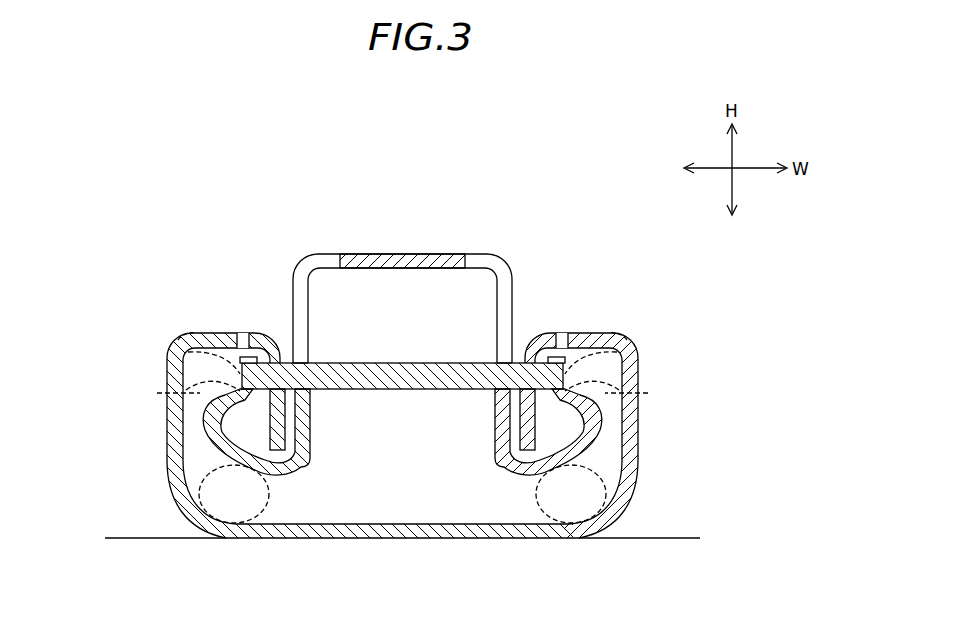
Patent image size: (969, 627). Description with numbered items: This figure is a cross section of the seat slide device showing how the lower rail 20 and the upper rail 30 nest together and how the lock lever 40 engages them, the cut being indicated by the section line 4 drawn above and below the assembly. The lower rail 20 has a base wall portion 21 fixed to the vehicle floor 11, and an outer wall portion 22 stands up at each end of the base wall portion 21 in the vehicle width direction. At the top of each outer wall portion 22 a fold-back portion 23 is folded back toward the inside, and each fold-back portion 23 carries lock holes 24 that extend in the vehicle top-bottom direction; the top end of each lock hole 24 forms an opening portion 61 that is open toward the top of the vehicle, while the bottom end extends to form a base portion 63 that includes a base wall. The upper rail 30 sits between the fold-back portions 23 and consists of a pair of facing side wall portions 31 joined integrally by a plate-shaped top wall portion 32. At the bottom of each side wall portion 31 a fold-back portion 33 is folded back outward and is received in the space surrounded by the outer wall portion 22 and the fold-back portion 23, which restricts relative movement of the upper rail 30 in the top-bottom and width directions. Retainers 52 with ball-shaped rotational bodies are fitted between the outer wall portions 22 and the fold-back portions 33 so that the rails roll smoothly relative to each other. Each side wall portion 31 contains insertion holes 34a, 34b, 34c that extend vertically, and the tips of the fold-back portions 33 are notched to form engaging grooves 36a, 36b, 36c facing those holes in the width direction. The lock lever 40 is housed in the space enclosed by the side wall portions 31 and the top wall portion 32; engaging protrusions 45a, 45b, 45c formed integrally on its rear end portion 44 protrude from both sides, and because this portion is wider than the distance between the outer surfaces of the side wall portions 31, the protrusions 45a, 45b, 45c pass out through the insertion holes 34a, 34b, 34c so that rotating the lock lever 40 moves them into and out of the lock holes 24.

The section line IV-IV 4 is at (402, 237).
The vehicle floor 11 is at (680, 537).
The lower rail 20 is at (403, 440).
The base wall portion 21 is at (455, 532).
The outer wall portion 22 is at (403, 419).
The fold-back portion 23 is at (400, 432).
The lock hole 24 is at (403, 419).
The upper rail 30 is at (401, 288).
The side wall portion 31 is at (401, 299).
The top wall portion 32 is at (372, 253).
The fold-back portion 33 is at (200, 455).
The insertion hole 34a is at (401, 299).
The insertion hole 34b is at (401, 299).
The insertion hole 34c is at (532, 280).
The engaging groove 36a is at (403, 435).
The engaging groove 36b is at (403, 435).
The engaging groove 36c is at (665, 443).
The lock lever 40 is at (402, 347).
The rear end portion 44 is at (402, 347).
The engaging protrusion 45a is at (406, 333).
The engaging protrusion 45b is at (406, 333).
The engaging protrusion 45c is at (192, 342).
The retainer 52 is at (200, 416).
The opening portion 61 is at (278, 345).
The base portion 63 is at (320, 364).